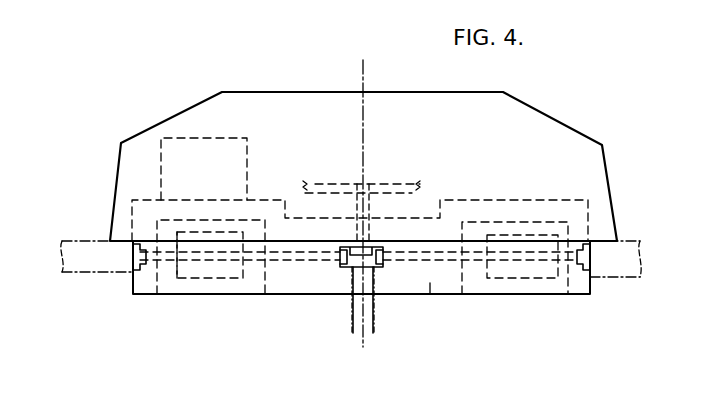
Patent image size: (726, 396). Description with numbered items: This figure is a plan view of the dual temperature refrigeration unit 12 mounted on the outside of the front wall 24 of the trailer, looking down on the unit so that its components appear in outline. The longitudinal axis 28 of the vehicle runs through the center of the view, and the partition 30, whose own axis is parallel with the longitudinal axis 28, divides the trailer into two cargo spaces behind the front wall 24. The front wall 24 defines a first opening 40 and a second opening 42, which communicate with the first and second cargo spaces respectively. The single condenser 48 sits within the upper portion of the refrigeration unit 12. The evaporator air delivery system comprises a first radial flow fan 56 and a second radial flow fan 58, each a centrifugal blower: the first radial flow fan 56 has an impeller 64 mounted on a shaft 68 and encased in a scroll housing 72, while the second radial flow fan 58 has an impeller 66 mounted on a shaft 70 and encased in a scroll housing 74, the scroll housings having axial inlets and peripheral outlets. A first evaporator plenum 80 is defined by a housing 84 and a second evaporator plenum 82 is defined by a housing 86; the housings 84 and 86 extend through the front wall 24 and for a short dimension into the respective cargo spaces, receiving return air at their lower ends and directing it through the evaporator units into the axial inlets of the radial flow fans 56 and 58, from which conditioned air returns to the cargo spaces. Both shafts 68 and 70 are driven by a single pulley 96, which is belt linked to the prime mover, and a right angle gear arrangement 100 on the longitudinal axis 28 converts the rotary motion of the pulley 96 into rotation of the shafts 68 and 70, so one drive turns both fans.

The dual temperature refrigeration unit 12 is at (262, 92).
The front wall 24 is at (62, 276).
The longitudinal axis 28 is at (362, 72).
The partition 30 is at (374, 332).
The first opening 40 is at (131, 280).
The second opening 42 is at (592, 295).
The condenser 48 is at (250, 138).
The first radial flow fan 56 is at (220, 324).
The second radial flow fan 58 is at (549, 327).
The impeller 64 is at (241, 296).
The impeller 66 is at (500, 296).
The shaft 68 is at (337, 265).
The shaft 70 is at (429, 266).
The scroll housing 72 is at (160, 296).
The scroll housing 74 is at (476, 274).
The first evaporator plenum 80 is at (293, 283).
The second evaporator plenum 82 is at (430, 292).
The housing 84 is at (342, 296).
The housing 86 is at (383, 296).
The pulley 96 is at (418, 182).
The right angle gear arrangement 100 is at (378, 241).